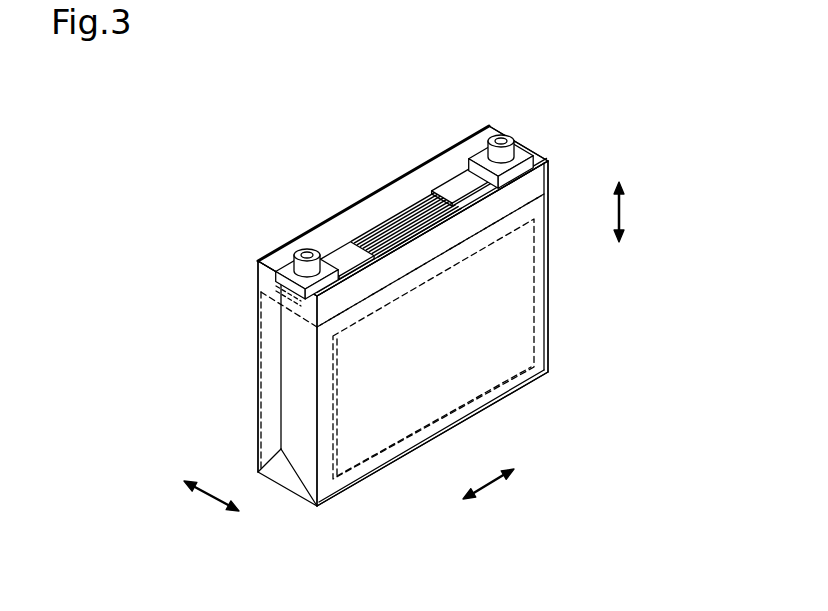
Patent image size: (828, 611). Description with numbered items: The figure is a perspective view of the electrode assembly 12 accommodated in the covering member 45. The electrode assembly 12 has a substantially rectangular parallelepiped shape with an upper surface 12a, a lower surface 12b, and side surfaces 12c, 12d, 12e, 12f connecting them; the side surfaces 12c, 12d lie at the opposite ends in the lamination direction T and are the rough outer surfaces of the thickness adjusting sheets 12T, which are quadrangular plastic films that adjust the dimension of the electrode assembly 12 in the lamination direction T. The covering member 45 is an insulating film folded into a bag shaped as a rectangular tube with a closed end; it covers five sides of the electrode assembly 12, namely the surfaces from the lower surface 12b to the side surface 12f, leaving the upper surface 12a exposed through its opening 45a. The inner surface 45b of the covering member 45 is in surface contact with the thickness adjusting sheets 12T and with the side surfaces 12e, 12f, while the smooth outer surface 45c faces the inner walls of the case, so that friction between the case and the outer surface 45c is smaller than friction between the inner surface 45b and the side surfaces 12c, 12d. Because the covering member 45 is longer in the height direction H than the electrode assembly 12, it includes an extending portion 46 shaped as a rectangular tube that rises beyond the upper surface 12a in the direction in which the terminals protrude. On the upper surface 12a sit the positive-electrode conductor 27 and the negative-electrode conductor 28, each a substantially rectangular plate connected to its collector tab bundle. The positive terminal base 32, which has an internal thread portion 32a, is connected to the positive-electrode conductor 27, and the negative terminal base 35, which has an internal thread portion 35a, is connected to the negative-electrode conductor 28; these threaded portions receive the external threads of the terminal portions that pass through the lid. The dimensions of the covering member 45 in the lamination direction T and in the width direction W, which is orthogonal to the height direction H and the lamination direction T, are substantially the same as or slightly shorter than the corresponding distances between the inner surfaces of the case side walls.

The electrode assembly 12 is at (548, 240).
The thickness adjusting sheet 12T is at (545, 271).
The upper surface 12a is at (421, 240).
The lower surface 12b is at (385, 470).
The side surface 12c is at (256, 357).
The side surface 12d is at (498, 392).
The side surface 12e is at (263, 434).
The side surface 12f is at (548, 351).
The positive-electrode conductor 27 is at (336, 250).
The negative-electrode conductor 28 is at (449, 187).
The positive terminal base 32 is at (285, 266).
The internal thread portion 32a is at (300, 254).
The negative terminal base 35 is at (517, 165).
The internal thread portion 35a is at (500, 141).
The covering member 45 is at (550, 299).
The opening 45a is at (374, 205).
The inner surface 45b is at (462, 152).
The outer surface 45c is at (445, 405).
The extending portion 46 is at (405, 180).
The height direction H is at (623, 211).
The lamination direction T is at (206, 500).
The width direction W is at (492, 487).